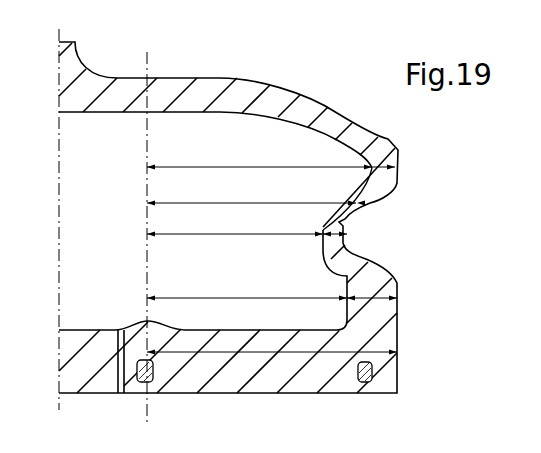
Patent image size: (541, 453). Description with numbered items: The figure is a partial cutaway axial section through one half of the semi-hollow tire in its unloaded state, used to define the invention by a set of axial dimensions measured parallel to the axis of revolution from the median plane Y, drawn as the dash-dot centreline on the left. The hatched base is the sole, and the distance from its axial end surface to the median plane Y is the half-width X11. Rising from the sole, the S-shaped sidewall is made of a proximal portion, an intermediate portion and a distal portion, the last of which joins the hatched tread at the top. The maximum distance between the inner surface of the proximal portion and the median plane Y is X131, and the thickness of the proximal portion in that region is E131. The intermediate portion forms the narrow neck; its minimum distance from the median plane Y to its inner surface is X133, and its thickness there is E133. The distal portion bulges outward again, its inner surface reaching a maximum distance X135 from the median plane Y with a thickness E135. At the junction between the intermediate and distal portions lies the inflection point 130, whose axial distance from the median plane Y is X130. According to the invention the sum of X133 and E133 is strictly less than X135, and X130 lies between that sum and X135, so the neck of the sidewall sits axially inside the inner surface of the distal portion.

The median plane Y is at (106, 236).
The maximum distance between the inner surface of the distal portion and the median X135 is at (271, 167).
The thickness of the distal portion E135 is at (389, 169).
The axial distance of the inflection point from the median plane X130 is at (222, 206).
The inflection point 130 is at (364, 204).
The minimum distance between the inner surface of the intermediate portion and the m X133 is at (262, 235).
The thickness of the intermediate portion E133 is at (338, 222).
The maximum distance between the inner surface of the proximal portion and the media X131 is at (247, 298).
The thickness of the proximal portion E131 is at (376, 300).
The half-width of the sole X11 is at (250, 353).